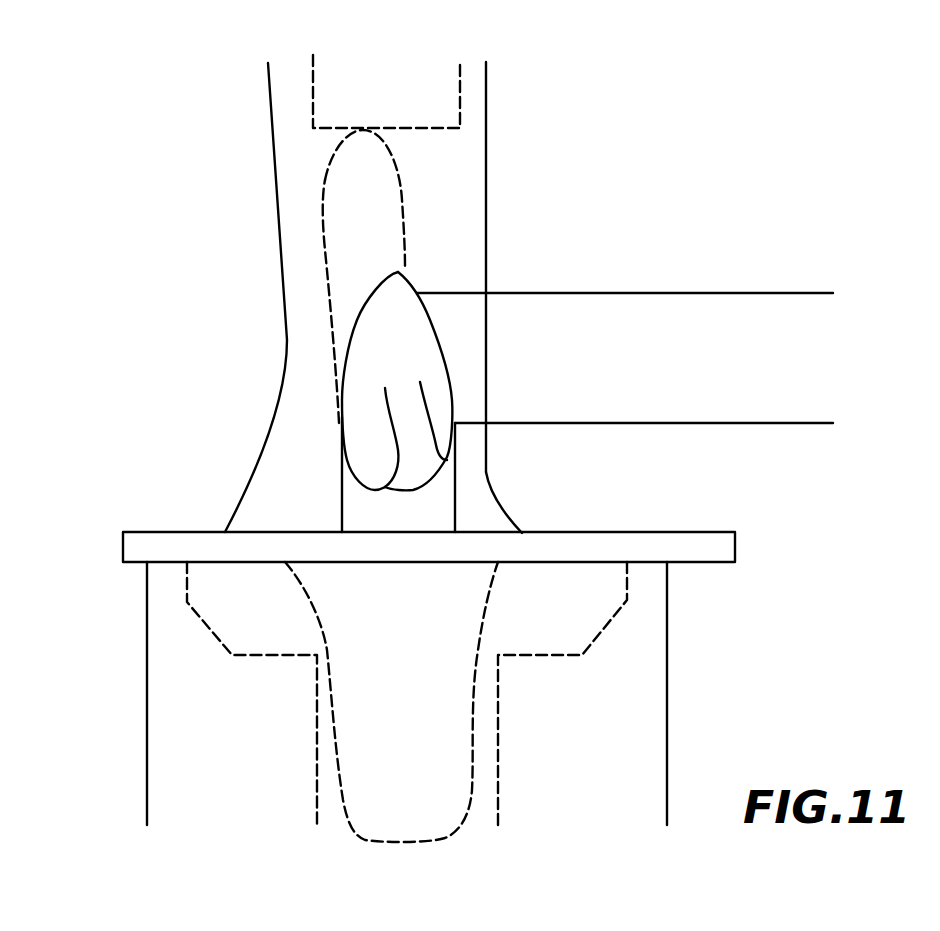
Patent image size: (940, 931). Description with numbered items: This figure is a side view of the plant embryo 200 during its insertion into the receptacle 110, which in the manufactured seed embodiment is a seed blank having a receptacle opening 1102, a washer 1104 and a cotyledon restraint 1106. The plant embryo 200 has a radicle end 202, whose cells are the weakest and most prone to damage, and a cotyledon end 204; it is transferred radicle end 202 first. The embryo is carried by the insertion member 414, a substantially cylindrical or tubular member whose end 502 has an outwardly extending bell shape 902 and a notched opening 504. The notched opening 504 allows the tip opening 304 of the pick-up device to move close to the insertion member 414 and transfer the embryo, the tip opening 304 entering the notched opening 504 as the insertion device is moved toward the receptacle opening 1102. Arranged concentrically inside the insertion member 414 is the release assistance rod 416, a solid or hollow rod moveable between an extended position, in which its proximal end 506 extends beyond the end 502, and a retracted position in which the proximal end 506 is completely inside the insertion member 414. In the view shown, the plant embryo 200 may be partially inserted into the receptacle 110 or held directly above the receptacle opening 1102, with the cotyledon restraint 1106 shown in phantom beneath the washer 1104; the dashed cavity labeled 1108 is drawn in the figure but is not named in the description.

The receptacle 110 is at (158, 722).
The plant embryo 200 is at (350, 235).
The radicle end 202 is at (392, 194).
The cotyledon end 204 is at (380, 490).
The tip opening 304 is at (417, 293).
The insertion member 414 is at (486, 155).
The release assistance rod 416 is at (463, 98).
The end 502 is at (515, 518).
The notched opening 504 is at (357, 313).
The proximal end 506 is at (327, 90).
The bell shape 902 is at (490, 478).
The receptacle opening 1102 is at (213, 515).
The washer 1104 is at (145, 547).
The cotyledon restraint 1106 is at (498, 740).
The bell-shaped cavity (phantom) 1108 is at (355, 812).